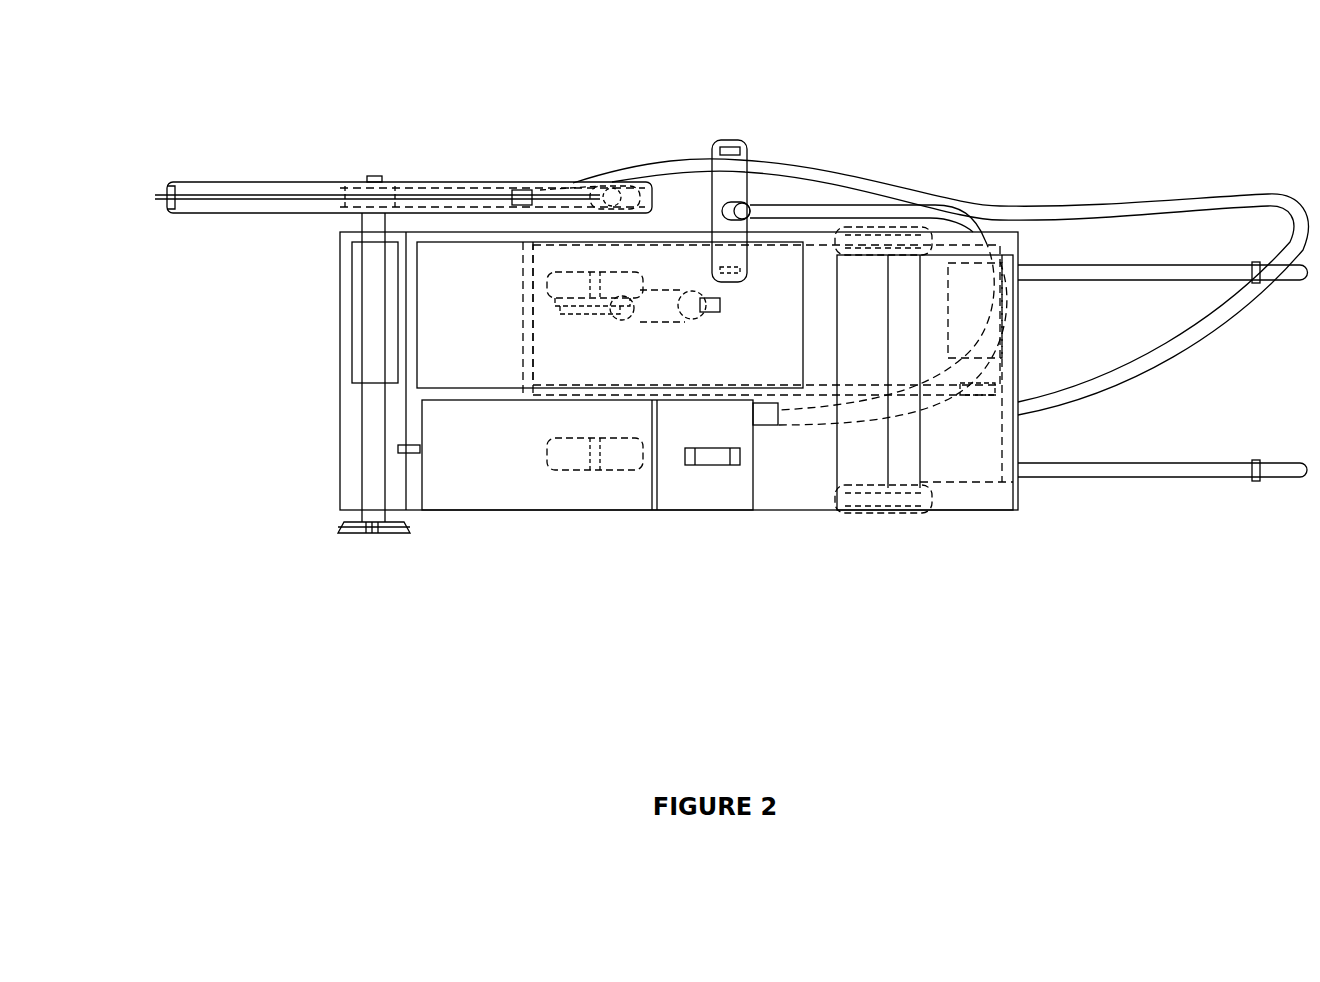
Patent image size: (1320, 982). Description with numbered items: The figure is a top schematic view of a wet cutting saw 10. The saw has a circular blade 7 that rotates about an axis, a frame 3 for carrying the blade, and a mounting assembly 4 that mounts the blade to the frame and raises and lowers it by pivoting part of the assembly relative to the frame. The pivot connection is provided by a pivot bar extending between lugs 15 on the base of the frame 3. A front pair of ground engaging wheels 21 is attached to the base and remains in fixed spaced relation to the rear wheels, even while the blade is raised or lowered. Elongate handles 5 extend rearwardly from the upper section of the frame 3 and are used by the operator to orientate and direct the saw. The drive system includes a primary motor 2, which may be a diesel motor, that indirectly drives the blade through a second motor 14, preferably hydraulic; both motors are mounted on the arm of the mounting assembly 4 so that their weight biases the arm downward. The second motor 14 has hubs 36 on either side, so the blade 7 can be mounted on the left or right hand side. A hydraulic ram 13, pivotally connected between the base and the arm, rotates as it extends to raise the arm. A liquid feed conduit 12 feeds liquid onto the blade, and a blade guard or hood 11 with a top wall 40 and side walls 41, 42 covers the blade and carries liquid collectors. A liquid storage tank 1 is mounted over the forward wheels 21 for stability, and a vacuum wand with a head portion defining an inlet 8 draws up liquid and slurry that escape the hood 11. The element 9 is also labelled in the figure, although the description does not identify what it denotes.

The liquid storage tank 1 is at (475, 490).
The primary motor 2 is at (498, 258).
The frame 3 is at (1003, 495).
The mounting assembly 4 is at (340, 508).
The elongate handles 5 is at (1170, 462).
The circular blade 7 is at (250, 195).
The inlet 8 is at (745, 205).
The connecting tube 9 is at (912, 215).
The wet cutting saw 10 is at (872, 280).
The blade guard or hood 11 is at (186, 180).
The liquid feed conduit 12 is at (535, 182).
The hydraulic ram 13 is at (664, 325).
The second motor 14 is at (358, 282).
The lugs 15 is at (1010, 238).
The front pair of ground engaging wheels 21 is at (595, 475).
The hubs 36 is at (392, 192).
The top wall 40 is at (220, 200).
The side wall 41 is at (290, 182).
The side wall 42 is at (178, 215).